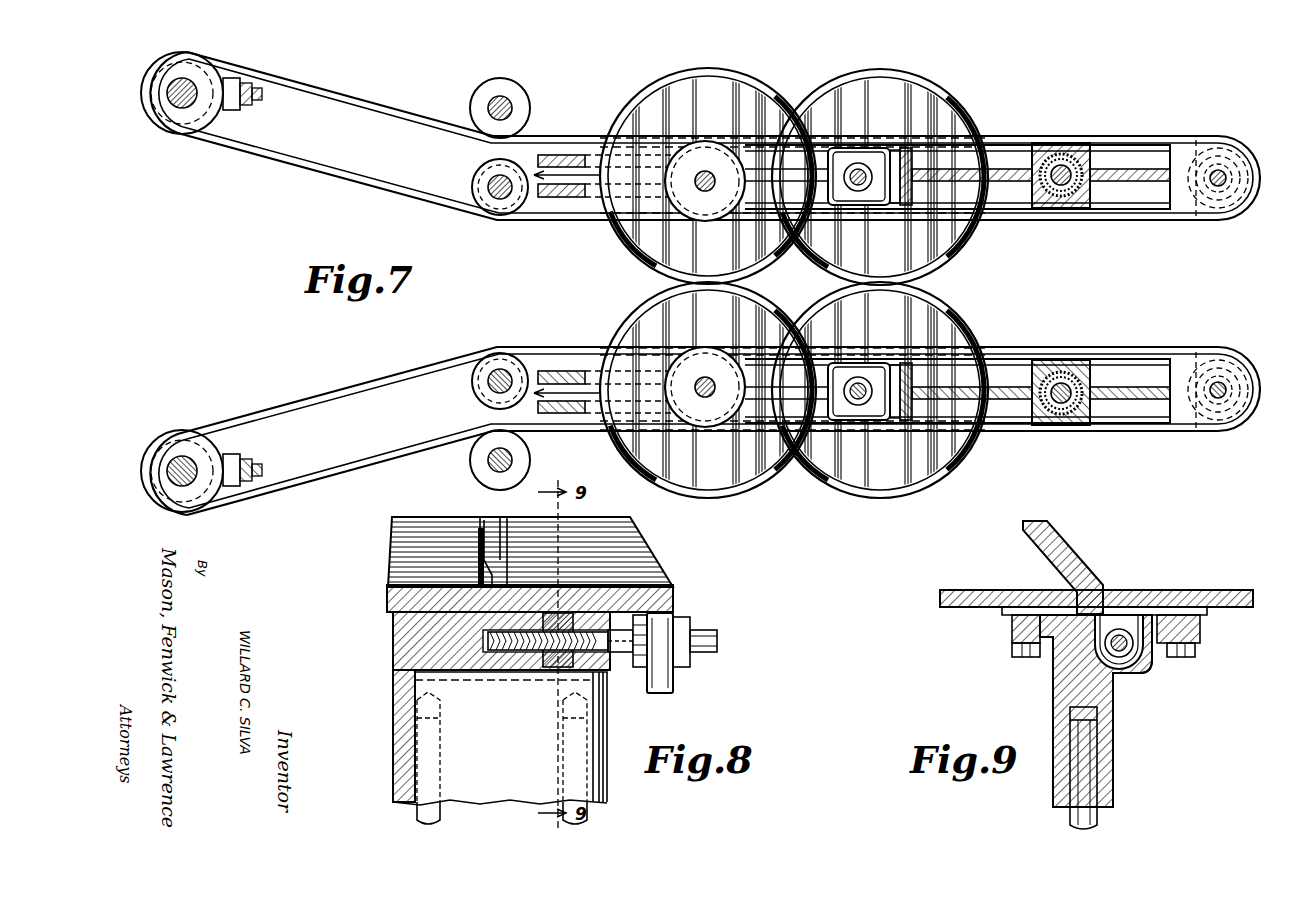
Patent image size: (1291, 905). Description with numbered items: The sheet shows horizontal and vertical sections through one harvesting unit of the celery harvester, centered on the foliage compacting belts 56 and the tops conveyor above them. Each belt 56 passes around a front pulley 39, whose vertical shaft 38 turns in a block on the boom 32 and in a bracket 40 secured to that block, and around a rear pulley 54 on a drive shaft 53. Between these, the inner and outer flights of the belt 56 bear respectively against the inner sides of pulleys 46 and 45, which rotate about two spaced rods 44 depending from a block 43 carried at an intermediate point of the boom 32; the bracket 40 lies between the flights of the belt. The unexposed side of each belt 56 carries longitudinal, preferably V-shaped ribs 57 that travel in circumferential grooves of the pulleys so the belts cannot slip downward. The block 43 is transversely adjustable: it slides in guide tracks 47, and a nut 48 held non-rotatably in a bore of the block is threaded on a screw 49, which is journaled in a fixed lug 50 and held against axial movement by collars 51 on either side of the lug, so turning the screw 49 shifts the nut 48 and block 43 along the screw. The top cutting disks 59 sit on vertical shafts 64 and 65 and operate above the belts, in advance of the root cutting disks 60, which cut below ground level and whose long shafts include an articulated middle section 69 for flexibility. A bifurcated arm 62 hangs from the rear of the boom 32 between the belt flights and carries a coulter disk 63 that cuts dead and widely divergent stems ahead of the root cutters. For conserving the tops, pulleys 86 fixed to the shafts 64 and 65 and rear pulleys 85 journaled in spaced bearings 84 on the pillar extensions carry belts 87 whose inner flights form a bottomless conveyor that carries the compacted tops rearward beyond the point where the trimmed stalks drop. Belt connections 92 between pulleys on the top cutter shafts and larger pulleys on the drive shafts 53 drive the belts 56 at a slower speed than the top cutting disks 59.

In FIG. 8, the boom 32 is at (392, 600).
In FIG. 9, the boom 32 is at (1048, 590).
In FIG. 7, the vertical shaft 38 is at (190, 462).
In FIG. 7, the pulley 39 is at (166, 72).
In FIG. 7, the bracket 40 is at (246, 108).
In FIG. 8, the block 43 is at (428, 688).
In FIG. 9, the block 43 is at (1110, 738).
In FIG. 7, the rods 44 is at (492, 386).
In FIG. 8, the rods 44 is at (418, 810).
In FIG. 9, the rods 44 is at (1092, 814).
In FIG. 7, the pulley 45 is at (518, 94).
In FIG. 7, the pulley 46 is at (484, 184).
In FIG. 8, the guide tracks 47 is at (395, 637).
In FIG. 9, the guide tracks 47 is at (1046, 650).
In FIG. 8, the nut 48 is at (575, 620).
In FIG. 9, the nut 48 is at (1140, 600).
In FIG. 8, the screw 49 is at (626, 640).
In FIG. 9, the screw 49 is at (1128, 632).
In FIG. 8, the fixed lug 50 is at (675, 680).
In FIG. 9, the fixed lug 50 is at (1128, 678).
In FIG. 8, the collars 51 is at (682, 622).
In FIG. 7, the drive shaft 53 is at (1060, 196).
In FIG. 7, the pulley 54 is at (1067, 146).
In FIG. 7, the belts 56 is at (372, 102).
In FIG. 7, the longitudinal ribs 57 is at (334, 174).
In FIG. 7, the top cutting disks 59 is at (650, 88).
In FIG. 7, the root cutting disks 60 is at (864, 70).
In FIG. 7, the bifurcated arm 62 is at (578, 188).
In FIG. 7, the coulter disk 63 is at (548, 158).
In FIG. 7, the vertical shaft 64 is at (700, 402).
In FIG. 7, the vertical shaft 65 is at (700, 188).
In FIG. 7, the articulated middle section 69 is at (858, 170).
In FIG. 7, the bearings 84 is at (1218, 202).
In FIG. 7, the pulleys 85 is at (1226, 152).
In FIG. 7, the pulleys 86 is at (706, 221).
In FIG. 7, the belts 87 is at (787, 218).
In FIG. 7, the belt connections 92 is at (906, 148).